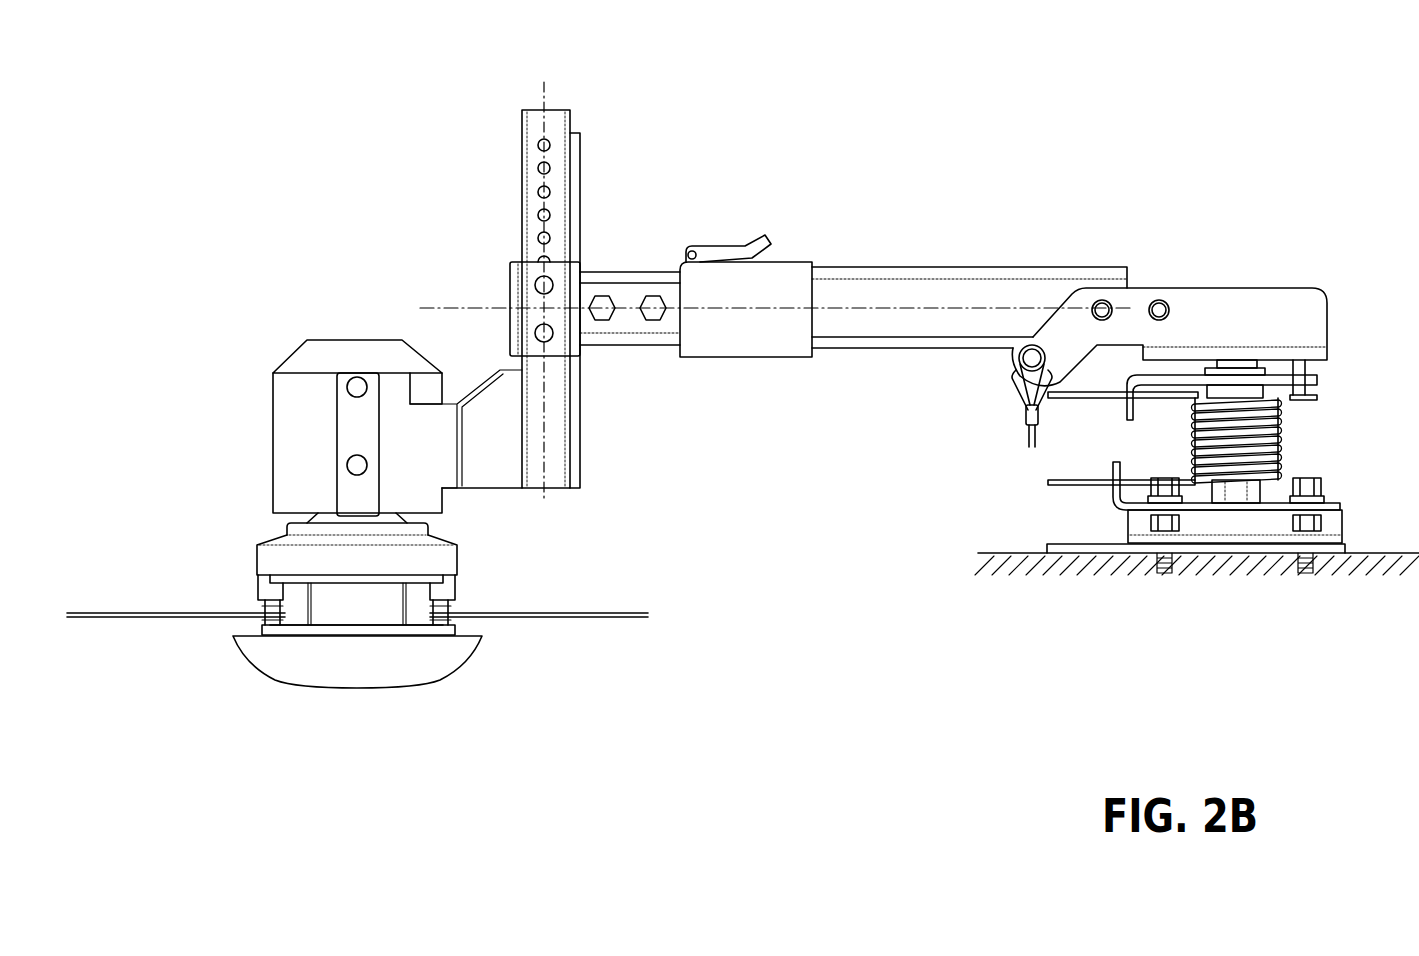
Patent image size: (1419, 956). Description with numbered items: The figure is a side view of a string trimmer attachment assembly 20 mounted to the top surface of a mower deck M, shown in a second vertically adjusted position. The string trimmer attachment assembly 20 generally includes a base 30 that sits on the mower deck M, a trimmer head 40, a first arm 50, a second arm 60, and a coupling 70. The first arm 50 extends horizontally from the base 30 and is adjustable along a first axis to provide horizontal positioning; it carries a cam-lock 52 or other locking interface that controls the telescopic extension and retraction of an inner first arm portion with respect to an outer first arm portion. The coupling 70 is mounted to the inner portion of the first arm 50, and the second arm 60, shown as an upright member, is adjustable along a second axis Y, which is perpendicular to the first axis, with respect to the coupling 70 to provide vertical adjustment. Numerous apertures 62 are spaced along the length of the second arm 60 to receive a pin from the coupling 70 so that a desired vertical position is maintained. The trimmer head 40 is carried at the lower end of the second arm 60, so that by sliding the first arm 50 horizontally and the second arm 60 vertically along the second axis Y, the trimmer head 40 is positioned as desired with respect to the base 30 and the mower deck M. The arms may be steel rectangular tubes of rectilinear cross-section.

The string trimmer attachment assembly 20 is at (938, 145).
The base 30 is at (1328, 458).
The trimmer head 40 is at (293, 340).
The first arm 50 is at (1030, 253).
The cam-lock 52 is at (788, 230).
The second arm 60 is at (607, 467).
The apertures 62 is at (538, 168).
The coupling 70 is at (640, 250).
The second axis Y is at (546, 93).
The mower deck M is at (1368, 543).